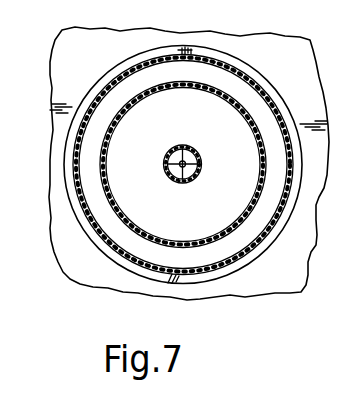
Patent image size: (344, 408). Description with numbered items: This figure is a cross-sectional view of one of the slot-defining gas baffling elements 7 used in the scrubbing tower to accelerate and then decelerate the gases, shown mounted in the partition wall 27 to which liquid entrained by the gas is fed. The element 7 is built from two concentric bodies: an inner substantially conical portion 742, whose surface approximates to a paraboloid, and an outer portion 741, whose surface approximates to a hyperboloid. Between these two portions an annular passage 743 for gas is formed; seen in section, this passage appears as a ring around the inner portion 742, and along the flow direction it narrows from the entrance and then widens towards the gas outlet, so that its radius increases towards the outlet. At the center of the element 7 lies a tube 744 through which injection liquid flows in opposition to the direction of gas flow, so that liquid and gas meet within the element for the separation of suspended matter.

The gas baffling element 7 is at (108, 258).
The partition wall 27 is at (256, 297).
The outer portion 741 is at (168, 83).
The inner substantially conical portion 742 is at (240, 226).
The annular passage 743 is at (249, 93).
The tube 744 is at (195, 156).